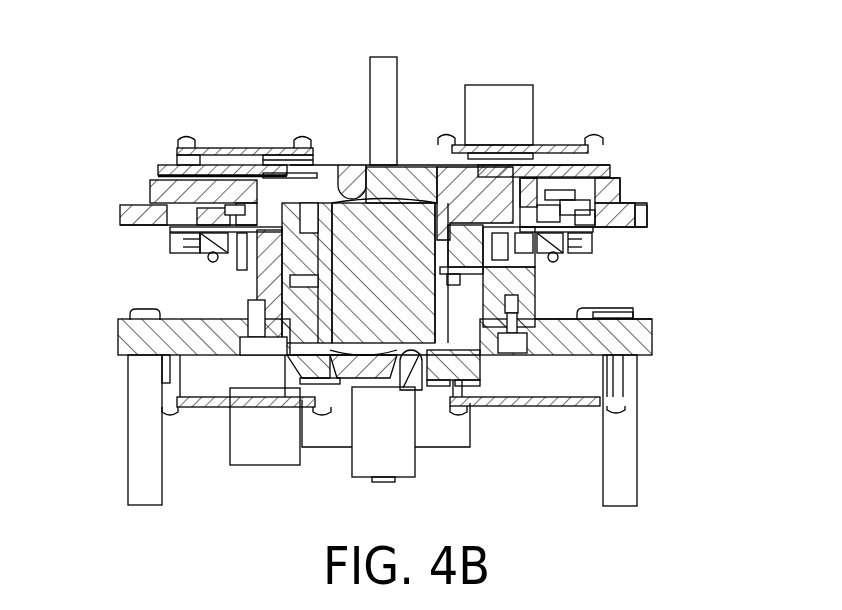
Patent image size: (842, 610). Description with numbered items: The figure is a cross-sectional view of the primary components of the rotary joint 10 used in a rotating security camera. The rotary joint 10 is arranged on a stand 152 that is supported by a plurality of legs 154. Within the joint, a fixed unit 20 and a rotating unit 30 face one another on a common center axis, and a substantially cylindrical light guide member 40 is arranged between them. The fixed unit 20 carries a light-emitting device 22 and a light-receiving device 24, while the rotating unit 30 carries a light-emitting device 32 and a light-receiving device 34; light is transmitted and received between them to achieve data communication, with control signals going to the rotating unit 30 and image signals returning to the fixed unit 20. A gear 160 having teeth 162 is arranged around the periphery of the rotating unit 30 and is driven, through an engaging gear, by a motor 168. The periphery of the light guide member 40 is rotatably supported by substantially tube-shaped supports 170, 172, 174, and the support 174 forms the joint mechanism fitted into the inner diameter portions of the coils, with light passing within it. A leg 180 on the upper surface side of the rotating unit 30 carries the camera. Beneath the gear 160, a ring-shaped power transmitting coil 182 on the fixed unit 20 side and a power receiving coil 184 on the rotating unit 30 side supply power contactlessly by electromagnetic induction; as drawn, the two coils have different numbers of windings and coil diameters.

The rotary joint 10 is at (674, 248).
The fixed unit 20 is at (480, 378).
The light-emitting device 22 is at (423, 378).
The light-receiving device 24 is at (343, 367).
The rotating unit 30 is at (450, 178).
The light-emitting device 32 is at (338, 165).
The light-receiving device 34 is at (425, 173).
The light guide member 40 is at (347, 283).
The stand 152 is at (655, 331).
The legs 154 is at (637, 477).
The gear 160 is at (625, 192).
The teeth 162 is at (648, 215).
The motor 168 is at (412, 475).
The support 170 is at (442, 289).
The support 172 is at (485, 345).
The support 174 is at (535, 288).
The leg 180 is at (384, 57).
The power transmitting coil 182 is at (178, 240).
The power receiving coil 184 is at (183, 217).